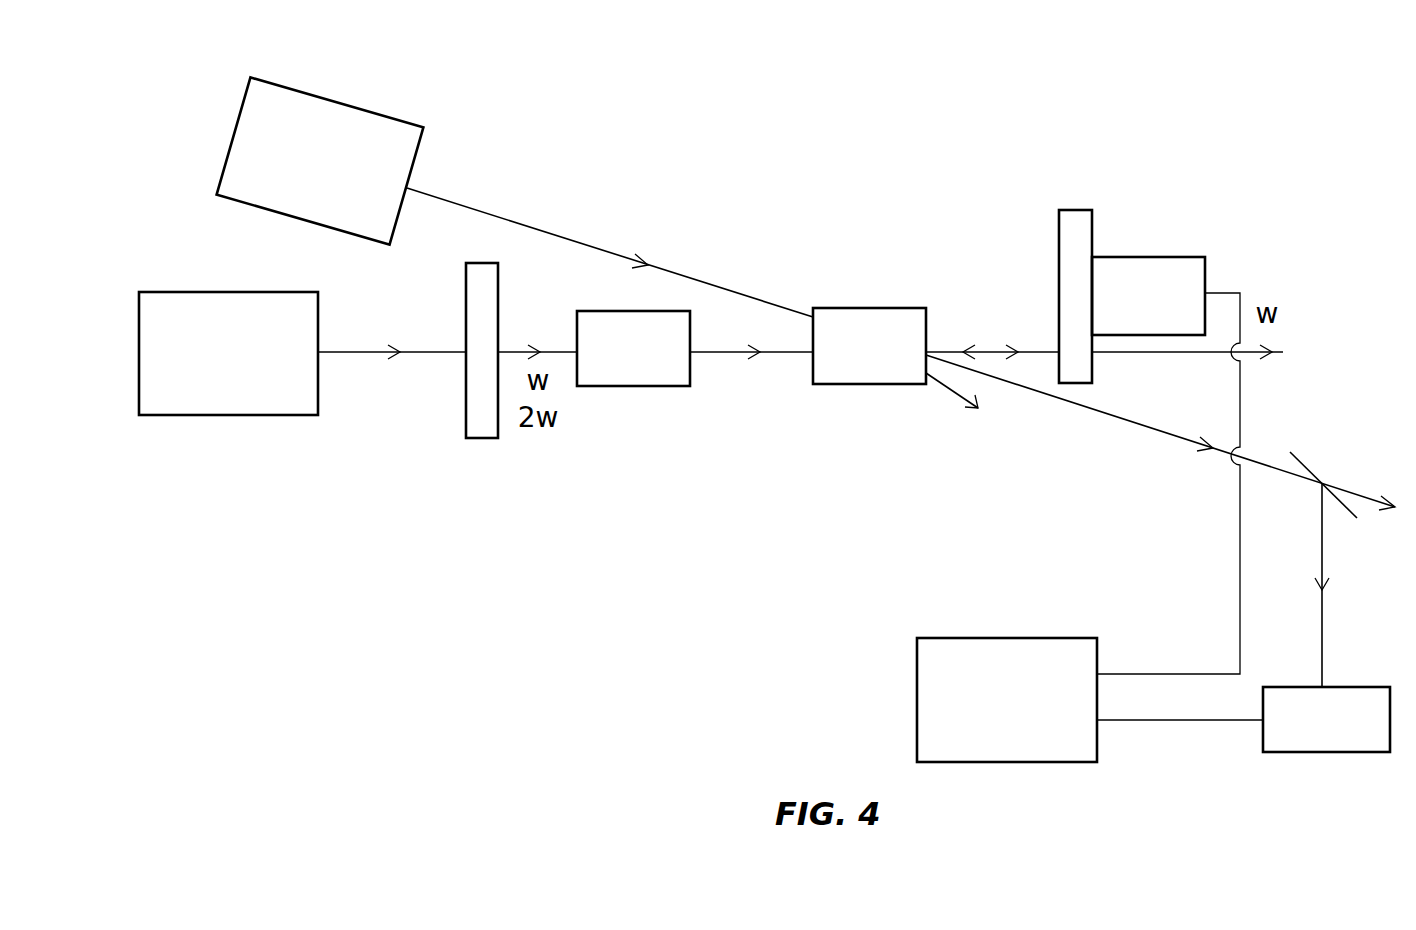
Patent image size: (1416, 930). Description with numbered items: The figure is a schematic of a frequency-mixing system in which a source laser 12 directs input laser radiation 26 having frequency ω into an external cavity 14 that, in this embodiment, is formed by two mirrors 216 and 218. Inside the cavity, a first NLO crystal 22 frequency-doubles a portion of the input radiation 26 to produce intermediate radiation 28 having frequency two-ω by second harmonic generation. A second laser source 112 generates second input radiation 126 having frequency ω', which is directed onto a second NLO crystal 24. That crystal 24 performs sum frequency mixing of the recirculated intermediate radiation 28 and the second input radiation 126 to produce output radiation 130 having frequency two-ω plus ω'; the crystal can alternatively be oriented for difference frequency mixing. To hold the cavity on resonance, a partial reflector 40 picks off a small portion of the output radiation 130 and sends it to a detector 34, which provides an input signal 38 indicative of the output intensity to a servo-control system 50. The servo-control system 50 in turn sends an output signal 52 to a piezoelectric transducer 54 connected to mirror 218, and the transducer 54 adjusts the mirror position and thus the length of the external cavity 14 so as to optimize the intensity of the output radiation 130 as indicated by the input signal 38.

The external cavity 14 is at (865, 83).
The source laser 12 is at (228, 291).
The second laser source 112 is at (283, 85).
The second input radiation 126 is at (495, 210).
The input laser radiation 26 is at (355, 353).
The mirror 216 is at (483, 438).
The NLO crystal 22 is at (623, 387).
The intermediate radiation 28 is at (770, 347).
The NLO crystal 24 is at (868, 308).
The mirror 218 is at (1067, 210).
The piezoelectric transducer 54 is at (1133, 257).
The output signal 52 is at (1243, 568).
The output radiation 130 is at (1183, 440).
The partial reflector 40 is at (1305, 462).
The servo-control system 50 is at (973, 633).
The detector 34 is at (1352, 686).
The input signal 38 is at (1150, 722).